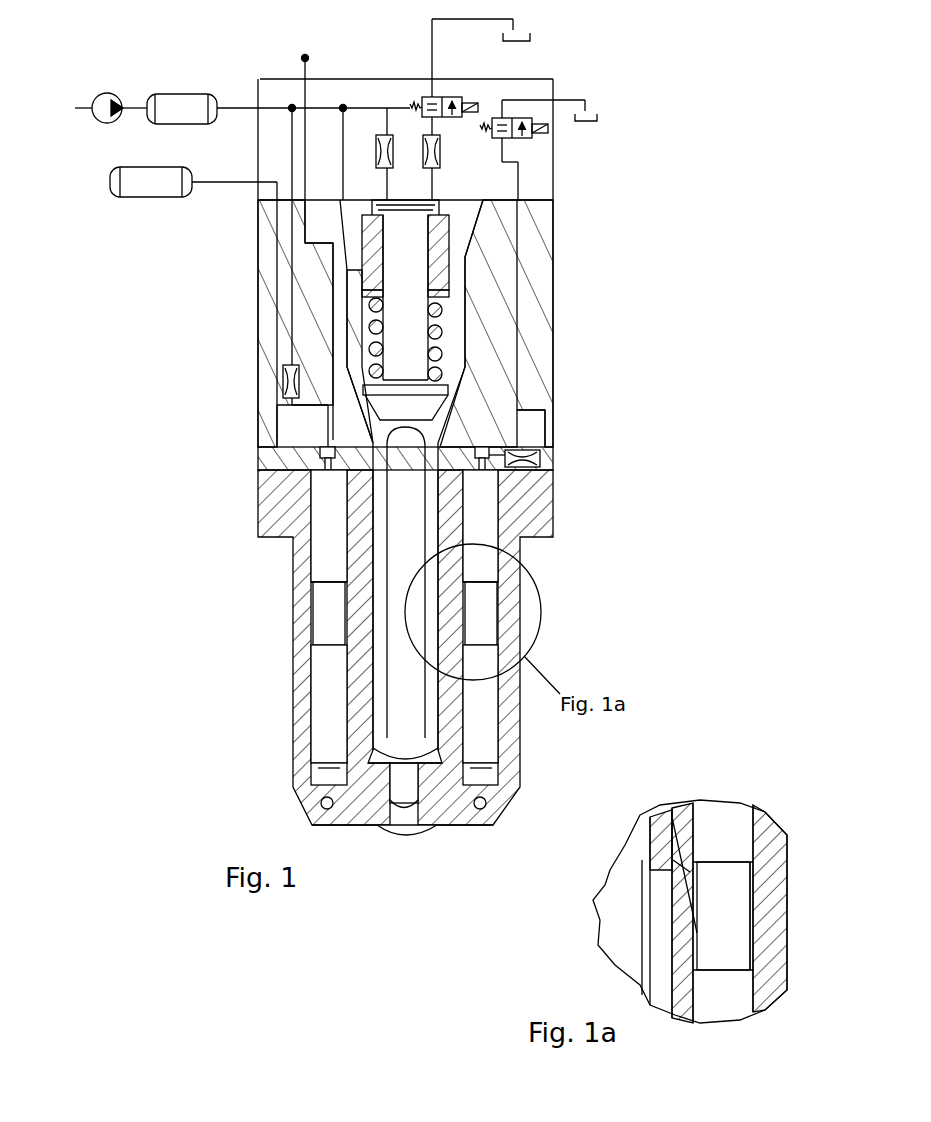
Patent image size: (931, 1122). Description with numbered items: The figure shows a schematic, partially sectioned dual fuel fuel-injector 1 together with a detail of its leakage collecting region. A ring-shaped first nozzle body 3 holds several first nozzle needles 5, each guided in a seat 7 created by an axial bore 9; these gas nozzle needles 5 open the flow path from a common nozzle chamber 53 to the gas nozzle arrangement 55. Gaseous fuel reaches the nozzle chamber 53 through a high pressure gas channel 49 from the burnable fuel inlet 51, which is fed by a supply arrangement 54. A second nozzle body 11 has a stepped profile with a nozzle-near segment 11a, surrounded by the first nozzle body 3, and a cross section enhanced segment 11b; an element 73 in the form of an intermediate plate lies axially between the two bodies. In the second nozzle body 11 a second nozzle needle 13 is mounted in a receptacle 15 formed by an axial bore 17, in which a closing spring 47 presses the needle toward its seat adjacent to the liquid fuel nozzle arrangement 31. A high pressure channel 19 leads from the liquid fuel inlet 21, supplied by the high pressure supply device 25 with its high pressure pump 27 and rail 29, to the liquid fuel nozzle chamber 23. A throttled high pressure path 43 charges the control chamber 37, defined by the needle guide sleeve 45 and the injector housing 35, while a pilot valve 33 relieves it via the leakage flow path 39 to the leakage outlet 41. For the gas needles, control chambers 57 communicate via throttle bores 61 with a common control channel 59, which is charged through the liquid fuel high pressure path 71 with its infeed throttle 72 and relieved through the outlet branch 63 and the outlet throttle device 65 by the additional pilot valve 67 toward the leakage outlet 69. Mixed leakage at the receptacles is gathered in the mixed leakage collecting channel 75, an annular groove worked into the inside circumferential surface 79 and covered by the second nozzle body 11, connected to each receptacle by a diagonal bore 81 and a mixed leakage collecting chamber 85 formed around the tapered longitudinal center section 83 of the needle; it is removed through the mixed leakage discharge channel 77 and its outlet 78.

In FIG. 1, the dual fuel fuel-injector 1 is at (642, 158).
In FIG. 1, the first nozzle body 3 is at (525, 535).
In FIG. 1A, the first nozzle body 3 is at (678, 815).
In FIG. 1, the first nozzle needle 5 is at (318, 680).
In FIG. 1A, the first nozzle needle 5 is at (727, 818).
In FIG. 1, the seat 7 is at (312, 697).
In FIG. 1, the axial bore 9 is at (318, 561).
In FIG. 1, the second nozzle body 11 is at (548, 367).
In FIG. 1A, the second nozzle body 11 is at (664, 825).
In FIG. 1, the first nozzle-near segment 11a is at (545, 525).
In FIG. 1, the second cross section enhanced segment 11b is at (262, 345).
In FIG. 1, the second nozzle needle 13 is at (405, 572).
In FIG. 1A, the second nozzle needle 13 is at (608, 940).
In FIG. 1, the receptacle 15 is at (452, 300).
In FIG. 1A, the receptacle 15 is at (645, 876).
In FIG. 1, the axial bore 17 is at (368, 702).
In FIG. 1, the high pressure channel 19 is at (340, 138).
In FIG. 1, the liquid fuel inlet 21 is at (256, 113).
In FIG. 1, the liquid fuel nozzle chamber 23 is at (428, 790).
In FIG. 1, the high pressure supply device 25 is at (147, 75).
In FIG. 1, the high pressure pump 27 is at (104, 118).
In FIG. 1, the rail 29 is at (178, 98).
In FIG. 1, the liquid fuel nozzle arrangement 31 is at (388, 824).
In FIG. 1, the pilot valve 33 is at (414, 88).
In FIG. 1, the injector housing 35 is at (537, 191).
In FIG. 1, the control chamber 37 is at (385, 216).
In FIG. 1, the leakage flow path 39 is at (428, 194).
In FIG. 1, the leakage outlet 41 is at (428, 74).
In FIG. 1, the high pressure path 43 is at (373, 108).
In FIG. 1, the needle guide sleeve 45 is at (438, 215).
In FIG. 1, the closing spring 47 is at (445, 357).
In FIG. 1, the high pressure gas channel 49 is at (275, 433).
In FIG. 1, the burnable fuel inlet 51 is at (258, 188).
In FIG. 1, the nozzle chamber 53 is at (497, 778).
In FIG. 1, the supply arrangement 54 is at (156, 204).
In FIG. 1, the gas nozzle arrangement 55 is at (312, 807).
In FIG. 1, the control chamber 57 is at (326, 477).
In FIG. 1, the control channel 59 is at (325, 452).
In FIG. 1, the throttle bore 61 is at (480, 458).
In FIG. 1, the outlet branch 63 is at (520, 336).
In FIG. 1, the outlet throttle device 65 is at (540, 463).
In FIG. 1, the additional pilot valve 67 is at (495, 112).
In FIG. 1, the leakage outlet 69 is at (557, 94).
In FIG. 1, the liquid fuel high pressure path 71 is at (293, 345).
In FIG. 1, the infeed throttle 72 is at (283, 379).
In FIG. 1, the element 73 is at (263, 462).
In FIG. 1, the mixed leakage collecting channel 75 is at (457, 577).
In FIG. 1A, the mixed leakage collecting channel 75 is at (678, 856).
In FIG. 1, the mixed leakage discharge channel 77 is at (336, 288).
In FIG. 1, the outlet 78 is at (297, 58).
In FIG. 1, the inside circumferential surface 79 is at (320, 722).
In FIG. 1A, the inside circumferential surface 79 is at (670, 988).
In FIG. 1, the bore 81 is at (345, 598).
In FIG. 1A, the bore 81 is at (680, 893).
In FIG. 1, the longitudinal center section 83 is at (315, 625).
In FIG. 1A, the longitudinal center section 83 is at (723, 916).
In FIG. 1, the mixed leakage collecting chamber 85 is at (498, 622).
In FIG. 1A, the mixed leakage collecting chamber 85 is at (753, 948).